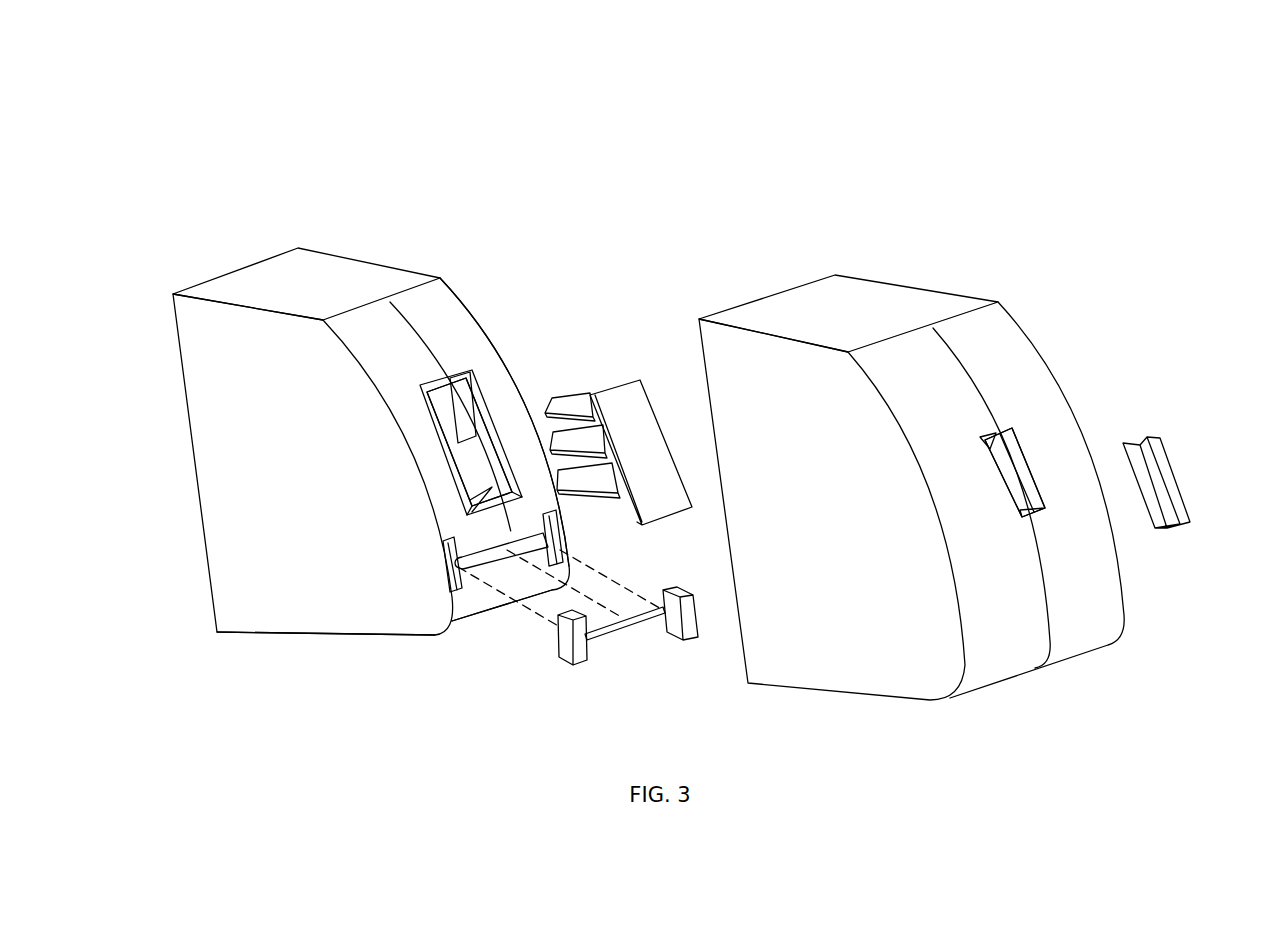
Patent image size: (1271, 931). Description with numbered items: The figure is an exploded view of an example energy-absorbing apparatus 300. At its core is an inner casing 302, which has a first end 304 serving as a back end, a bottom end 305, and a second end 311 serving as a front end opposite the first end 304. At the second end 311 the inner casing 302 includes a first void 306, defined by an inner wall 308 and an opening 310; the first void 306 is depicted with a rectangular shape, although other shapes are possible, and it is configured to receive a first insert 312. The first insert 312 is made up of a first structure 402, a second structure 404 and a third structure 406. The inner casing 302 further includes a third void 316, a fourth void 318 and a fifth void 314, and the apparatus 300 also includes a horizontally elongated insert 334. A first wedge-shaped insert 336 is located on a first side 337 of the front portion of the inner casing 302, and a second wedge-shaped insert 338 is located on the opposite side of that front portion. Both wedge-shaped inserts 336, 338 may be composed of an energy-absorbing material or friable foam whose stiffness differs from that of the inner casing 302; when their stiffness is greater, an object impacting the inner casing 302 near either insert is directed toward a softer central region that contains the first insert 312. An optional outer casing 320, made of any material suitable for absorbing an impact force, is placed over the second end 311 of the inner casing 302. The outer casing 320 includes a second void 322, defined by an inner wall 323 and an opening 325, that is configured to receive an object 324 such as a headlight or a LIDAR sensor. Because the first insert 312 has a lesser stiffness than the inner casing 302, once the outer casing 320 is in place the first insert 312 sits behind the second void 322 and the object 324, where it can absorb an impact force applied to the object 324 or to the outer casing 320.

The energy-absorbing apparatus 300 is at (673, 121).
The inner casing 302 is at (345, 272).
The first end 304 is at (150, 345).
The bottom end 305 is at (391, 656).
The first void 306 is at (497, 383).
The inner wall 308 is at (462, 388).
The opening 310 is at (477, 443).
The second end 311 is at (510, 316).
The first insert 312 is at (662, 510).
The fifth void 314 is at (510, 552).
The third void 316 is at (447, 568).
The fourth void 318 is at (561, 530).
The outer casing 320 is at (880, 300).
The second void 322 is at (1034, 445).
The inner wall 323 is at (1030, 480).
The object 324 is at (1188, 472).
The opening 325 is at (994, 447).
The horizontally elongated insert 334 is at (630, 636).
The first wedge-shaped insert 336 is at (570, 655).
The first side 337 is at (413, 528).
The second wedge-shaped insert 338 is at (686, 622).
The first structure 402 is at (573, 407).
The second structure 404 is at (575, 442).
The third structure 406 is at (583, 485).